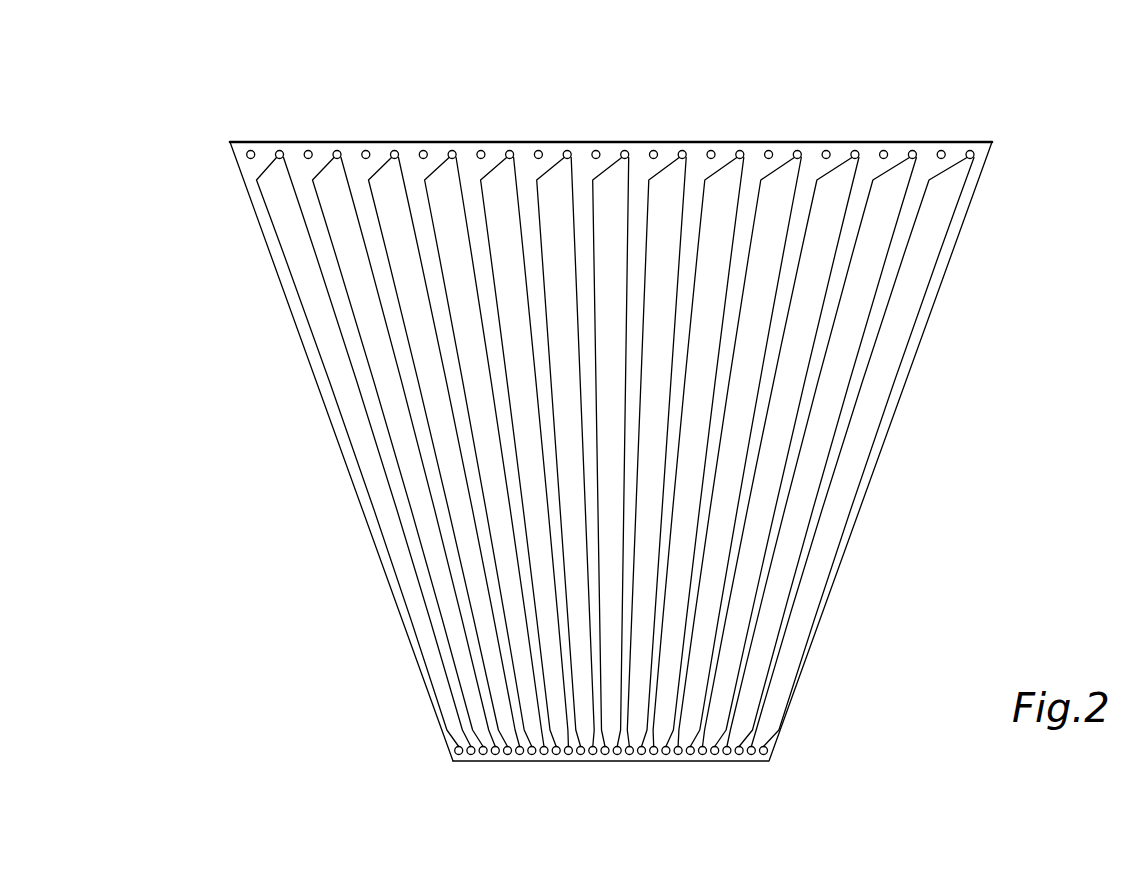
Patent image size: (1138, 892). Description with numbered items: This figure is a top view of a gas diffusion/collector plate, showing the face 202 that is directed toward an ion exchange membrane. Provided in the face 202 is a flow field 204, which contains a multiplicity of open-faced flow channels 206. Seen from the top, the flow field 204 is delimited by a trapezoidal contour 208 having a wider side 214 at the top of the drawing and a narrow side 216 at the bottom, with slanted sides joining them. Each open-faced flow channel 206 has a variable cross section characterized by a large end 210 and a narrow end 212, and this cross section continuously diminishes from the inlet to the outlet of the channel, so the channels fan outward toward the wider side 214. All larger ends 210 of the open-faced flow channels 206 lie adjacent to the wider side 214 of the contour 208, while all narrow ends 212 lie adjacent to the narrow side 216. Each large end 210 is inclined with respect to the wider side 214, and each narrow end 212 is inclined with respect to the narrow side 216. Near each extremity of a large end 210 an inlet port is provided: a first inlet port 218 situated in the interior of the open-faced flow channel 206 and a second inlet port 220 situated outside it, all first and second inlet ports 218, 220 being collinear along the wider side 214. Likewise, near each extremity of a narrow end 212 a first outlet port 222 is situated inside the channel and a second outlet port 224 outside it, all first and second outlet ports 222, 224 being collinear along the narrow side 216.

The face 202 is at (340, 305).
The flow field 204 is at (560, 275).
The open-faced flow channel 206 is at (345, 400).
The trapezoidal contour 208 is at (388, 597).
The large end 210 is at (905, 323).
The narrow end 212 is at (767, 733).
The wider side 214 is at (525, 152).
The narrow side 216 is at (606, 754).
The first inlet port 218 is at (626, 150).
The second inlet port 220 is at (712, 150).
The first outlet port 222 is at (454, 749).
The second outlet port 224 is at (542, 754).